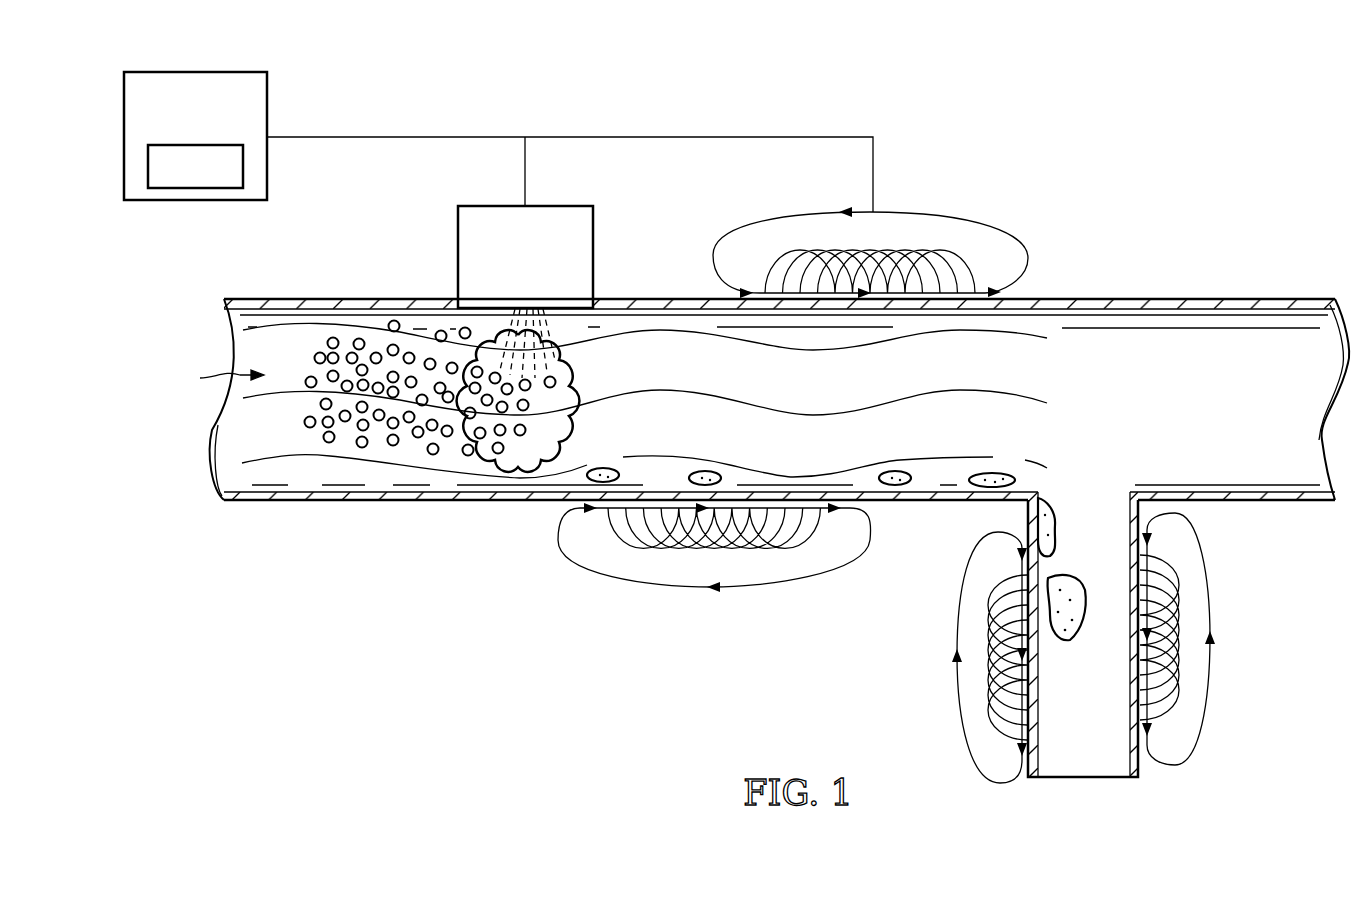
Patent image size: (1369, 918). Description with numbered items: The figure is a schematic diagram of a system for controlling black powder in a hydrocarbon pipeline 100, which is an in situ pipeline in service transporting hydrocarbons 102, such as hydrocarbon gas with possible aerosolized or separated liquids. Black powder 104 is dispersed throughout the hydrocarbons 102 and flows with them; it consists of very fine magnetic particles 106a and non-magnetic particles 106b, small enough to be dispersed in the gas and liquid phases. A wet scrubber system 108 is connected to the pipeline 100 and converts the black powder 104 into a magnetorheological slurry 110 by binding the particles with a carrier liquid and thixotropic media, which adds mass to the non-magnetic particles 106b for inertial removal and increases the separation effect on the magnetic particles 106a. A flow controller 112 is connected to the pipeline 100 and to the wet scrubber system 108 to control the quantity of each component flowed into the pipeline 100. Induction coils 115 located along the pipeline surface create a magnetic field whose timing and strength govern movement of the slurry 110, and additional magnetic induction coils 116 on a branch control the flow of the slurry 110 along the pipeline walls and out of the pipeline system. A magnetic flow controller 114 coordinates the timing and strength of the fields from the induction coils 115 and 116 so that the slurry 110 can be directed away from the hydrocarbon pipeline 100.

The hydrocarbon pipeline 100 is at (1130, 297).
The hydrocarbons 102 is at (655, 388).
The black powder 104 is at (210, 377).
The magnetic particles 106a is at (329, 443).
The non-magnetic particles 106b is at (362, 448).
The wet scrubber system 108 is at (458, 252).
The magnetorheological slurry 110 is at (605, 465).
The flow controller 112 is at (197, 72).
The magnetic flow controller 114 is at (197, 145).
The induction coils 115 is at (905, 250).
The additional magnetic induction coils 116 is at (990, 700).